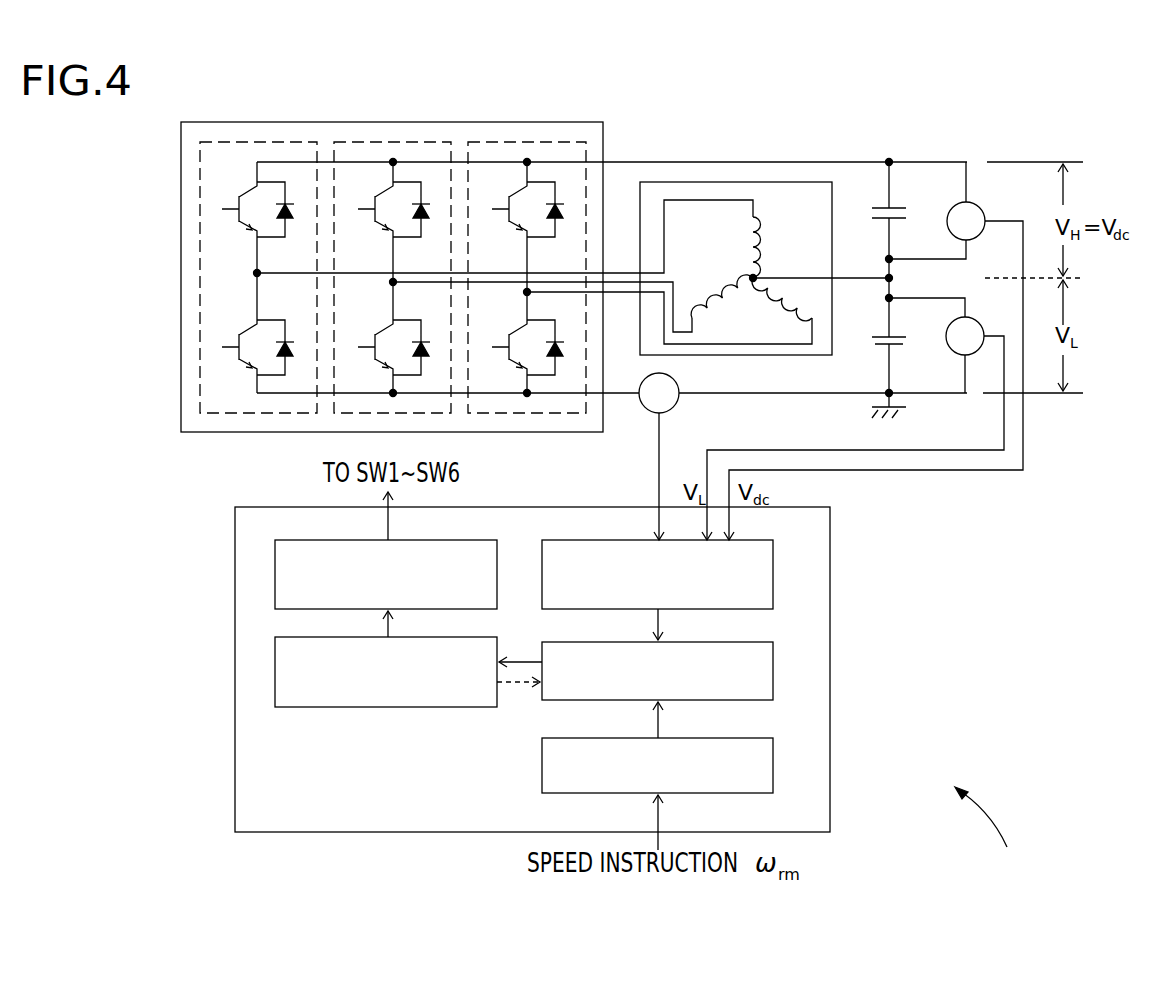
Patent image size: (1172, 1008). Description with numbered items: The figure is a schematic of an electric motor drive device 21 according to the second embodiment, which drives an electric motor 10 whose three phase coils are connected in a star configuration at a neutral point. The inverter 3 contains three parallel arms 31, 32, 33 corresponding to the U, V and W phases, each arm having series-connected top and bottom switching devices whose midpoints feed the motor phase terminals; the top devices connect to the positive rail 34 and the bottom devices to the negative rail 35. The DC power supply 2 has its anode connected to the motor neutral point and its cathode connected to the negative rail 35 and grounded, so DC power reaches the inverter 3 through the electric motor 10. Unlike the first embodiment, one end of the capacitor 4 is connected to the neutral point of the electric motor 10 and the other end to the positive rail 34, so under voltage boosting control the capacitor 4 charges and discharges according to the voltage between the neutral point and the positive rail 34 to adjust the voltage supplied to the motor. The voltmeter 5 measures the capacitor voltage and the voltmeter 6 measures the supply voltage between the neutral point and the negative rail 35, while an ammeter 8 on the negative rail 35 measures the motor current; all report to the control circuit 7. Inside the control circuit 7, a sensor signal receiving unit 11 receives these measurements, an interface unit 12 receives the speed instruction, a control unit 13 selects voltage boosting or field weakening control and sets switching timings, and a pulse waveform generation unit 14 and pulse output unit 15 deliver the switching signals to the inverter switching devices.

The DC power supply 2 is at (873, 344).
The inverter 3 is at (222, 122).
The capacitor 4 is at (883, 225).
The voltmeter 5 is at (982, 235).
The voltmeter 6 is at (948, 353).
The control circuit 7 is at (563, 671).
The ammeter 8 is at (677, 405).
The electric motor 10 is at (805, 182).
The sensor signal receiving unit 11 is at (775, 579).
The interface unit 12 is at (775, 771).
The control unit 13 is at (775, 668).
The pulse waveform generation unit 14 is at (275, 690).
The pulse output unit 15 is at (275, 593).
The electric motor drive device 21 is at (1000, 845).
The arm 31 is at (278, 142).
The arm 32 is at (413, 142).
The arm 33 is at (563, 142).
The positive rail 34 is at (633, 162).
The negative rail 35 is at (620, 396).